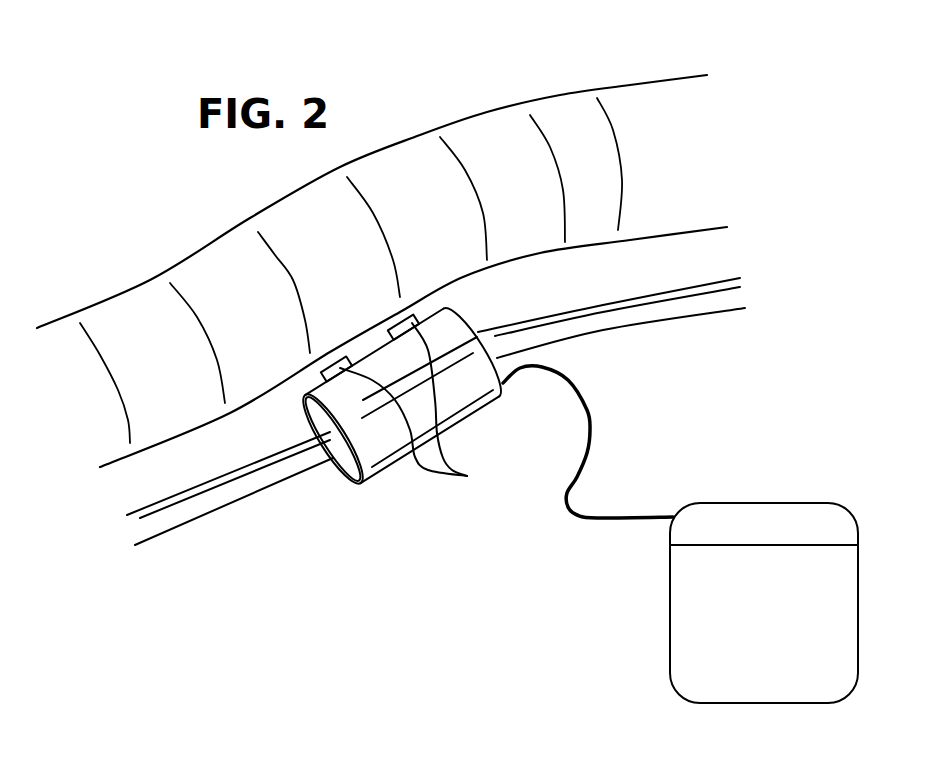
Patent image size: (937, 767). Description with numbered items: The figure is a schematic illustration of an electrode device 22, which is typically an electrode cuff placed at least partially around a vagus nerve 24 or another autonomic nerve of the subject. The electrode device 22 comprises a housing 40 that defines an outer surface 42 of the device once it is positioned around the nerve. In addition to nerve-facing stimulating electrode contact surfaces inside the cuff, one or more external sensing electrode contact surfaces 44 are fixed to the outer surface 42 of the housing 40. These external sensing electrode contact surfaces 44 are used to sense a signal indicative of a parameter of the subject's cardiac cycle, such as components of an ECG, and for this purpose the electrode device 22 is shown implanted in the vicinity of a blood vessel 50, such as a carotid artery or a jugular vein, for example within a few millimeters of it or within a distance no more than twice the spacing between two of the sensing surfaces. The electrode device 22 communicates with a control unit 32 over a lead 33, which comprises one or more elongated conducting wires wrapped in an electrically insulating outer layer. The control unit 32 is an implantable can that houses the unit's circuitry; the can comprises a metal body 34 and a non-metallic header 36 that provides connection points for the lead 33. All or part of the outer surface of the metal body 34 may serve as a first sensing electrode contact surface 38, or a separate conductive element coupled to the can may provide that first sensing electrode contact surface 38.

The electrode device 22 is at (401, 436).
The vagus nerve 24 is at (693, 305).
The control unit 32 is at (720, 590).
The lead 33 is at (588, 412).
The metal body 34 is at (826, 695).
The non-metallic header 36 is at (686, 508).
The first sensing electrode contact surface 38 is at (843, 578).
The housing 40 is at (380, 467).
The outer surface 42 is at (452, 320).
The external sensing electrode contact surfaces 44 is at (462, 475).
The blood vessel 50 is at (487, 127).